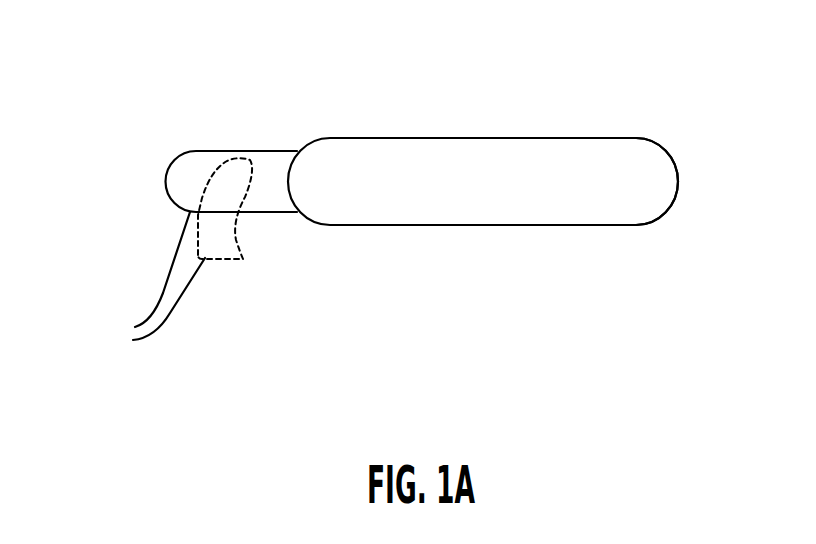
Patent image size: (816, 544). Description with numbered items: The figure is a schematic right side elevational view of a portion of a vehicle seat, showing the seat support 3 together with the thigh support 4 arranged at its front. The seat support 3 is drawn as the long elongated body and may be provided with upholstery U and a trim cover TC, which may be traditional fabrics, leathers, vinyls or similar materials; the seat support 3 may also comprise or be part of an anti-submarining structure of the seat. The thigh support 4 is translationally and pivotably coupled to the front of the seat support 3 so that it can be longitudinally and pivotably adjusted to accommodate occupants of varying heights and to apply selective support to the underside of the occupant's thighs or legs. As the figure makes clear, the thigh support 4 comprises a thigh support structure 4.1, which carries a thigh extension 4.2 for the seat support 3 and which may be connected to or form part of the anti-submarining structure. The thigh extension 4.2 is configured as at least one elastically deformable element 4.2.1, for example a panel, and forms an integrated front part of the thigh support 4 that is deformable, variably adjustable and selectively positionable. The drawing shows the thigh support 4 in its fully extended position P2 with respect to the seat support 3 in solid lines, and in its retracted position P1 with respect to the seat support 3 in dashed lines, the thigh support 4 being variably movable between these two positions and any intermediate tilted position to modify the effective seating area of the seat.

The seat support 3 is at (543, 137).
The thigh support 4 is at (188, 122).
The thigh support structure 4.1 is at (300, 148).
The thigh extension 4.2 is at (236, 253).
The elastically deformable element 4.2.1 is at (228, 233).
The trim cover TC is at (663, 145).
The upholstery U is at (652, 182).
The retracted position P1 is at (237, 282).
The fully extended position P2 is at (157, 202).